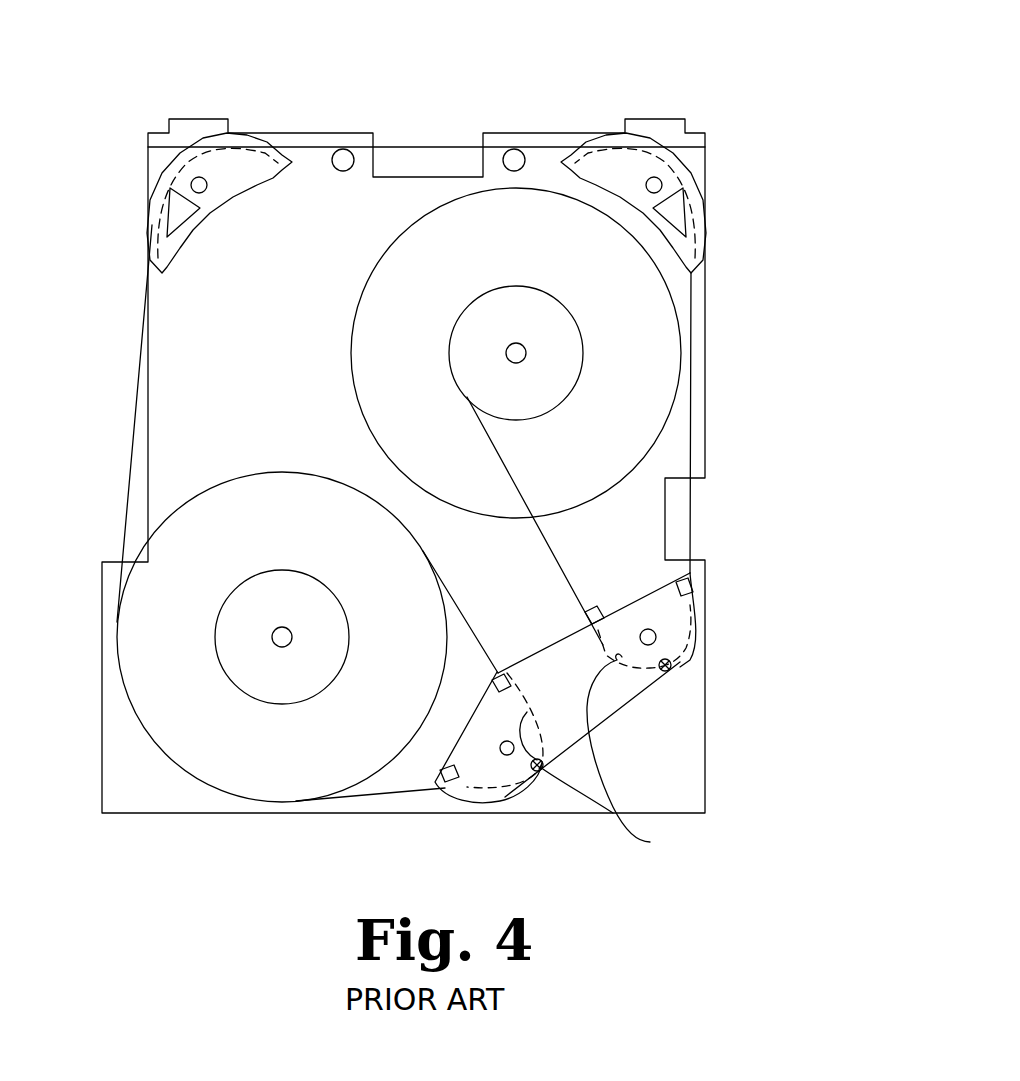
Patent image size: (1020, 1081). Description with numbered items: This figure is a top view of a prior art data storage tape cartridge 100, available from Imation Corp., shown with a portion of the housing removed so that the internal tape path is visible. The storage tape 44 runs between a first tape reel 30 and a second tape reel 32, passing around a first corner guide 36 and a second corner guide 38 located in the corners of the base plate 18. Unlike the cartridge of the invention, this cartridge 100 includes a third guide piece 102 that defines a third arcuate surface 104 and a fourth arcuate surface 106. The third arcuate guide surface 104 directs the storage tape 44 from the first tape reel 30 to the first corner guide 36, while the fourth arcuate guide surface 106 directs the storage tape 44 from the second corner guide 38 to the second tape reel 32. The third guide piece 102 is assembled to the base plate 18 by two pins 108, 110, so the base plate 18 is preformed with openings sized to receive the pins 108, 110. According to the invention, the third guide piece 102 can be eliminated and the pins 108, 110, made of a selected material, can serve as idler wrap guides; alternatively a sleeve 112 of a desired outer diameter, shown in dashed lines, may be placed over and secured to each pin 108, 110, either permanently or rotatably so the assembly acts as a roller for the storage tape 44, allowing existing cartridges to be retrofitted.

The data storage tape cartridge 100 is at (444, 450).
The base plate 18 is at (700, 714).
The first tape reel 30 is at (675, 360).
The second tape reel 32 is at (128, 662).
The first corner guide 36 is at (688, 163).
The second corner guide 38 is at (230, 192).
The storage tape 44 is at (547, 550).
The third guide piece 102 is at (612, 720).
The third arcuate surface 104 is at (692, 621).
The fourth arcuate surface 106 is at (511, 772).
The pin 108 is at (655, 630).
The pin 110 is at (502, 757).
The sleeve 112 is at (650, 842).